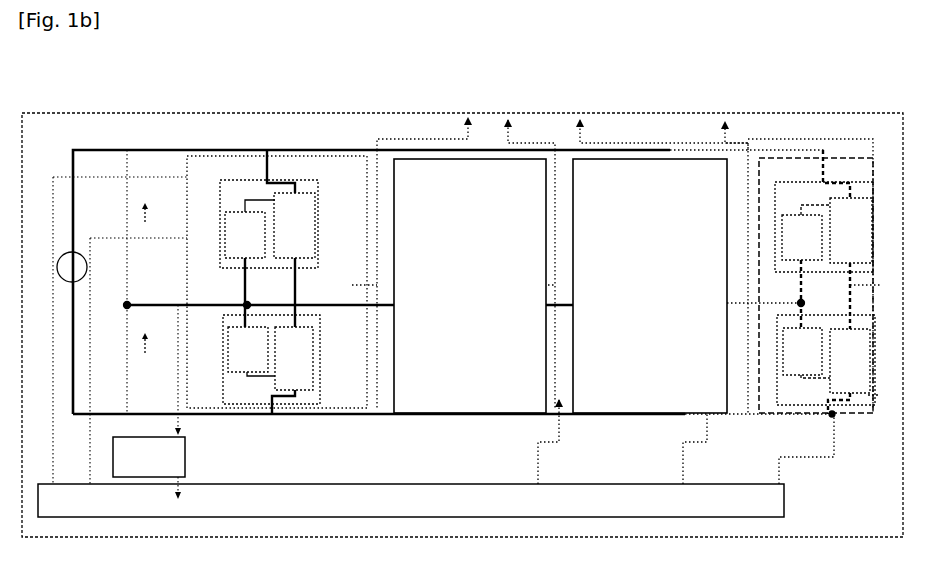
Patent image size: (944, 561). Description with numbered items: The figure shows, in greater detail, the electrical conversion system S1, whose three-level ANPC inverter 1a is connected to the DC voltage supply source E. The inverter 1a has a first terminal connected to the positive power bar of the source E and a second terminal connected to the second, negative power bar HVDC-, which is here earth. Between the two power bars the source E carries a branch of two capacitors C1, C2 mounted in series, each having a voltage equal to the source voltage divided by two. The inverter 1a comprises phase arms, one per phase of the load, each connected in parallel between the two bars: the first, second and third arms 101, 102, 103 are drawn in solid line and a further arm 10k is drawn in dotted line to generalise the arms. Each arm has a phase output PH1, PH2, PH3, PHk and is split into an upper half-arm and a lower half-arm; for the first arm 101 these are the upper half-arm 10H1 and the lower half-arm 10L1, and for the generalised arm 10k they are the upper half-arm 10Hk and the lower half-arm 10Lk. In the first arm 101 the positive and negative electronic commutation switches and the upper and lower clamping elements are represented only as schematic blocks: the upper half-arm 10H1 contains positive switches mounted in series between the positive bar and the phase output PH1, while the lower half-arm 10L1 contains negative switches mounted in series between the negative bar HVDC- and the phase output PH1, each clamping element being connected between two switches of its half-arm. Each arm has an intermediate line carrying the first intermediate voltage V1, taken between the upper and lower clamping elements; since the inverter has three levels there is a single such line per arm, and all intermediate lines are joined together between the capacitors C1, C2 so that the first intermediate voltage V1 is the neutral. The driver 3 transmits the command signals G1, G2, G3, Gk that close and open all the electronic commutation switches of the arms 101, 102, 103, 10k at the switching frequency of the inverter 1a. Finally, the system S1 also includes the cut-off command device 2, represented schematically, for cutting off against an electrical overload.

The inverter 1a is at (778, 141).
The cut-off command device 2 is at (149, 457).
The driver 3 is at (411, 501).
The first arm 101 is at (282, 306).
The second arm 102 is at (474, 281).
The third arm 103 is at (660, 278).
The phase arm 10k is at (819, 301).
The upper half-arm of first arm 10H1 is at (314, 200).
The lower half-arm of first arm 10L1 is at (304, 393).
The upper half-arm 10Hk is at (824, 239).
The lower half-arm 10Lk is at (828, 366).
The electrical conversion system S1 is at (128, 104).
The supply source E is at (58, 267).
The capacitor C1 is at (140, 218).
The capacitor C2 is at (140, 348).
The first intermediate voltage V1 is at (464, 306).
The second power bar HVDC- is at (388, 418).
The phase output PH1 is at (422, 134).
The phase output PH2 is at (531, 135).
The phase output PH3 is at (664, 135).
The phase output PHk is at (802, 266).
The command signal G1 is at (91, 501).
The command signal G2 is at (539, 454).
The command signal G3 is at (690, 461).
The command signal Gk is at (798, 462).